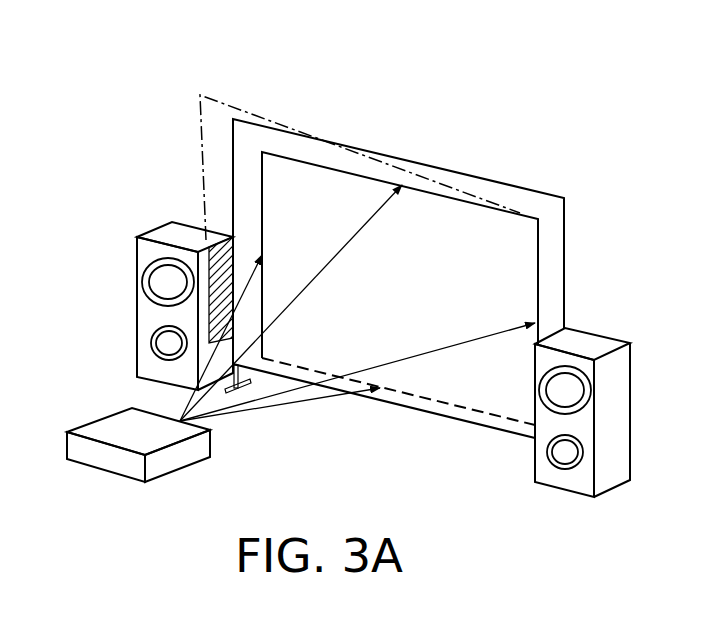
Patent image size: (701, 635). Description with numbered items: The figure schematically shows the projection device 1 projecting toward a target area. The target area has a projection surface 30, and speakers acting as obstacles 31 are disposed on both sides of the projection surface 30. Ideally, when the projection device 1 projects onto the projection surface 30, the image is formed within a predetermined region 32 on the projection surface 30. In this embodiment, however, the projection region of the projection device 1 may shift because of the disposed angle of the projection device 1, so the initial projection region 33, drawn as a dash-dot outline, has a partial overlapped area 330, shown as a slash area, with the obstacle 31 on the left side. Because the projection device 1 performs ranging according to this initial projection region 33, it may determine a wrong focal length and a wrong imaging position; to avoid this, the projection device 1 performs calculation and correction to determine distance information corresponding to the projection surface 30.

The projection device 1 is at (100, 418).
The projection surface 30 is at (427, 162).
The obstacle 31 is at (150, 230).
The predetermined region 32 is at (477, 200).
The initial projection region 33 is at (248, 112).
The partial overlapped area 330 is at (217, 312).